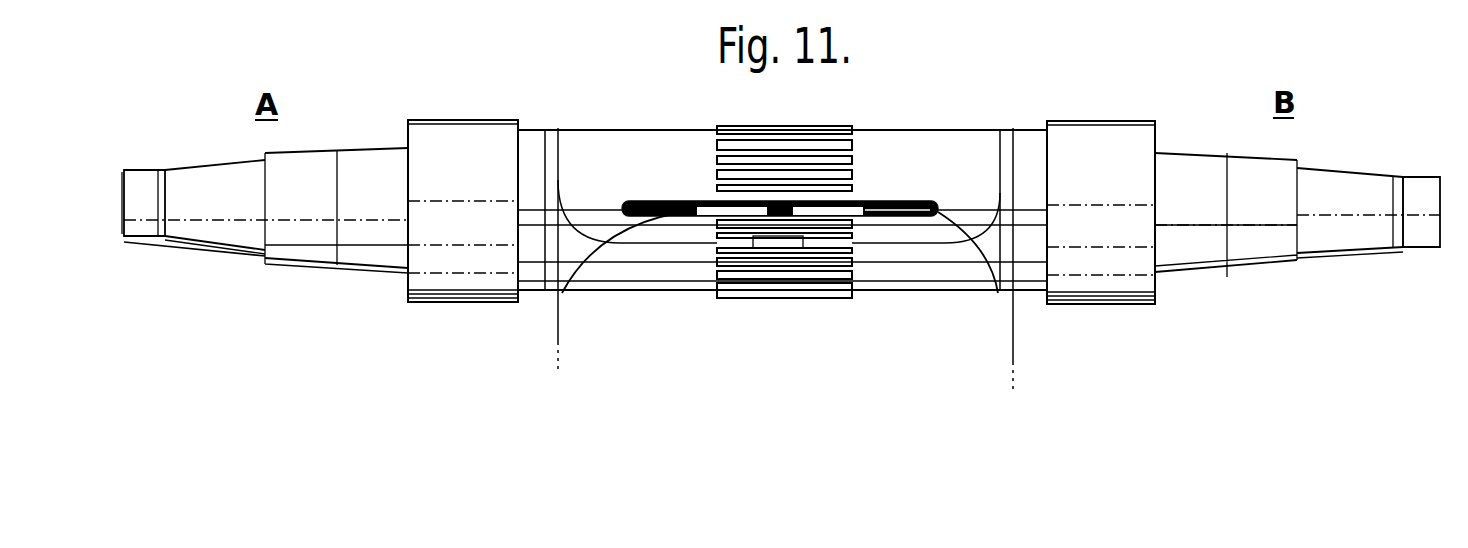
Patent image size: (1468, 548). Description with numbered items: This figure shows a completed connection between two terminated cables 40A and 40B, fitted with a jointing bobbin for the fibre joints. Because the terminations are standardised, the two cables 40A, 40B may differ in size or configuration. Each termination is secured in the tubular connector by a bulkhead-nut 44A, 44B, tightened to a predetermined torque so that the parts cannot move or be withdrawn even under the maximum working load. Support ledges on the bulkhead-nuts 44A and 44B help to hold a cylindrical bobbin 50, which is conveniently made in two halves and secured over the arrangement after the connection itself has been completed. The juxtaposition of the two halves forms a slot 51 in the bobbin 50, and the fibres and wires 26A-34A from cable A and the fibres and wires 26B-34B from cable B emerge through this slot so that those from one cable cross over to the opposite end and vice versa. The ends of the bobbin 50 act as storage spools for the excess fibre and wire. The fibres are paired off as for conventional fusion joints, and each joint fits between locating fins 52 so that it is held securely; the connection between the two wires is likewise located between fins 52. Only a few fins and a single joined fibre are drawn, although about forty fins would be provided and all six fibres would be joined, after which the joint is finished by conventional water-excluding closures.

The cable 40A is at (204, 240).
The cable 40B is at (1373, 238).
The bulkhead-nut 44A is at (441, 140).
The bulkhead-nut 44B is at (1123, 140).
The cylindrical bobbin 50 is at (868, 113).
The slot 51 is at (925, 204).
The locating fins 52 is at (810, 298).
The fibres and wires of cable B 26B-34B is at (590, 269).
The fibres and wires of cable A 26A-34A is at (1060, 281).